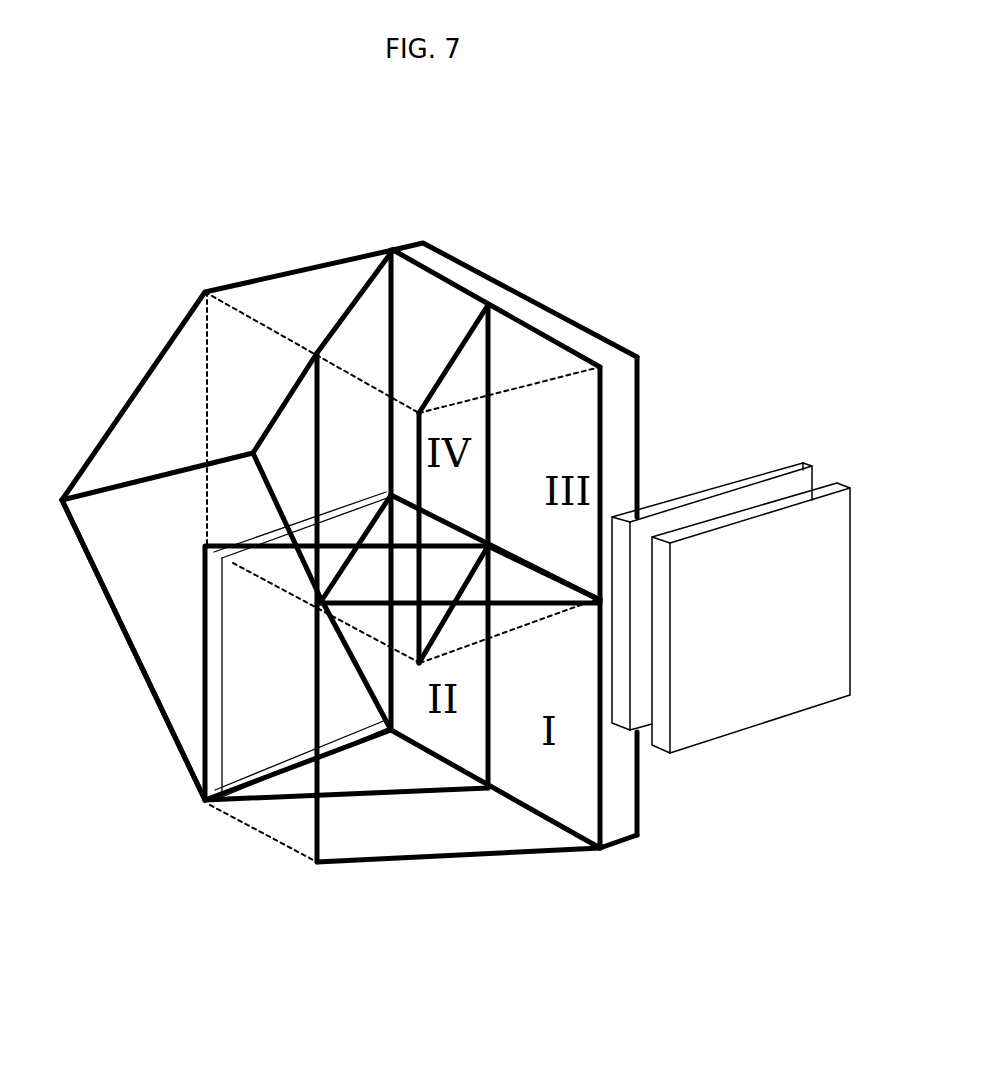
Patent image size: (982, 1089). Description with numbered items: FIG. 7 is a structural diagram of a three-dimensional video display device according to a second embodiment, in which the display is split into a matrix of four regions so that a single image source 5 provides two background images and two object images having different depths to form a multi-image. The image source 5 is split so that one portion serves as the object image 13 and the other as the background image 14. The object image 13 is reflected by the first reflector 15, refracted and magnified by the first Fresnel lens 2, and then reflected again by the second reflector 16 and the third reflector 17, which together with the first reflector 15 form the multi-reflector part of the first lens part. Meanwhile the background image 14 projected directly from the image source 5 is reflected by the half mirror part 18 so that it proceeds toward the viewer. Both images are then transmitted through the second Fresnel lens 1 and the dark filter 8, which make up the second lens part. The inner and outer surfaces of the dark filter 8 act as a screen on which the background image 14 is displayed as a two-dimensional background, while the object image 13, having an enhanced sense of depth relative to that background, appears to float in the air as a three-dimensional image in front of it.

The second Fresnel lens 1 is at (736, 567).
The first Fresnel lens 2 is at (247, 713).
The image source 5 is at (646, 645).
The dark filter 8 is at (751, 628).
The object image 13 is at (458, 729).
The background image 14 is at (547, 357).
The first reflector 15 is at (402, 870).
The second reflector 16 is at (126, 650).
The third reflector 17 is at (331, 556).
The half mirror part 18 is at (458, 528).